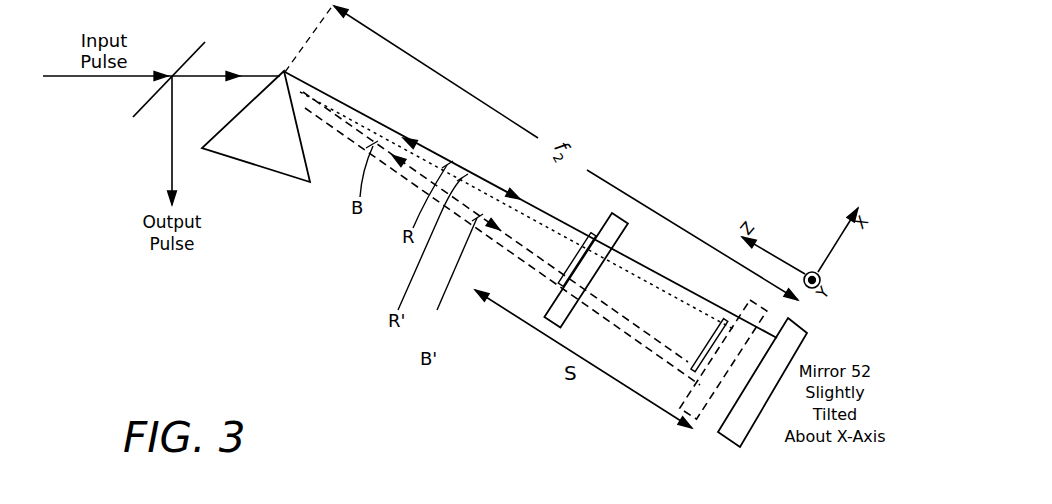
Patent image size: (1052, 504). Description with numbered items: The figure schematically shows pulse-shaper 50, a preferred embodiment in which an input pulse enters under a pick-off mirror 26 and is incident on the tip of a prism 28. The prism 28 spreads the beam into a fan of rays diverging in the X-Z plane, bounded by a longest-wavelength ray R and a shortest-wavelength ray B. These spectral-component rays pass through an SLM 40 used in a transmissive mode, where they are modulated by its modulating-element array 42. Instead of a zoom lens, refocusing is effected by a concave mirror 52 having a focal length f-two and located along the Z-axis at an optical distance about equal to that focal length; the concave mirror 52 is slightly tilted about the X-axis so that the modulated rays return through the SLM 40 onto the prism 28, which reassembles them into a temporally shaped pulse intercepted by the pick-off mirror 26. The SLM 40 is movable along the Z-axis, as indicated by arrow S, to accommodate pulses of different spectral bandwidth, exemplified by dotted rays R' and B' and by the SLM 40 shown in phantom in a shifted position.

The pick-off mirror 26 is at (140, 108).
The prism 28 is at (290, 177).
The SLM 40 is at (568, 322).
The modulating-element array 42 is at (560, 283).
The pulse-shaper 50 is at (355, 378).
The concave mirror 52 is at (740, 446).